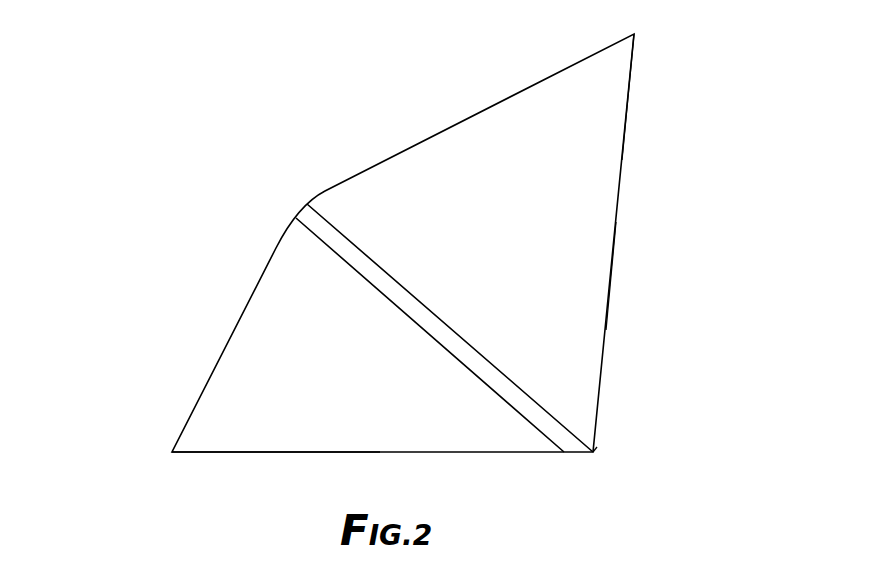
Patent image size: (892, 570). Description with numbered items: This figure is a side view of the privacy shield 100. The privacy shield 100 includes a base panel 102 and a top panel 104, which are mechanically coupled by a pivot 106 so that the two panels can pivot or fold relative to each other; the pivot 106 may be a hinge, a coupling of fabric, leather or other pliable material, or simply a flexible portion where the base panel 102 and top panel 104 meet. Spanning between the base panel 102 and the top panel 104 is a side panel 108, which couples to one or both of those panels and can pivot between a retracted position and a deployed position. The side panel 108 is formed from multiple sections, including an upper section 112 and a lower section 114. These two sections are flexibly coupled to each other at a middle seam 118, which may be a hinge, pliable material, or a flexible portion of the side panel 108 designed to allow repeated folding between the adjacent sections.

The privacy shield 100 is at (260, 180).
The base panel 102 is at (189, 461).
The top panel 104 is at (642, 92).
The pivot 106 is at (594, 454).
The side panel 108 is at (582, 237).
The upper section 112 is at (527, 218).
The lower section 114 is at (352, 382).
The middle seam 118 is at (470, 348).